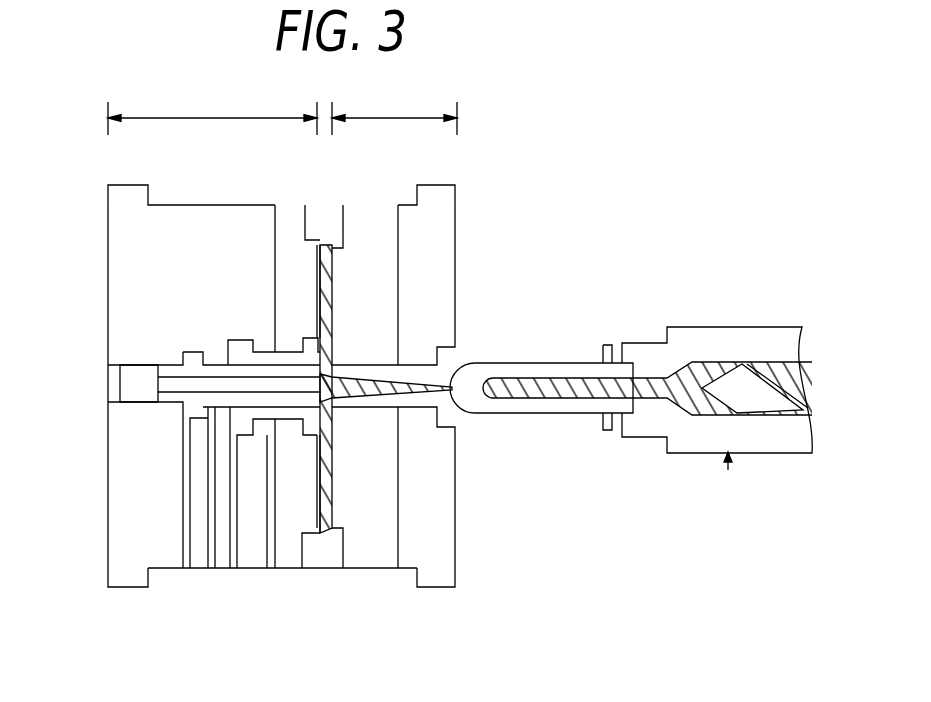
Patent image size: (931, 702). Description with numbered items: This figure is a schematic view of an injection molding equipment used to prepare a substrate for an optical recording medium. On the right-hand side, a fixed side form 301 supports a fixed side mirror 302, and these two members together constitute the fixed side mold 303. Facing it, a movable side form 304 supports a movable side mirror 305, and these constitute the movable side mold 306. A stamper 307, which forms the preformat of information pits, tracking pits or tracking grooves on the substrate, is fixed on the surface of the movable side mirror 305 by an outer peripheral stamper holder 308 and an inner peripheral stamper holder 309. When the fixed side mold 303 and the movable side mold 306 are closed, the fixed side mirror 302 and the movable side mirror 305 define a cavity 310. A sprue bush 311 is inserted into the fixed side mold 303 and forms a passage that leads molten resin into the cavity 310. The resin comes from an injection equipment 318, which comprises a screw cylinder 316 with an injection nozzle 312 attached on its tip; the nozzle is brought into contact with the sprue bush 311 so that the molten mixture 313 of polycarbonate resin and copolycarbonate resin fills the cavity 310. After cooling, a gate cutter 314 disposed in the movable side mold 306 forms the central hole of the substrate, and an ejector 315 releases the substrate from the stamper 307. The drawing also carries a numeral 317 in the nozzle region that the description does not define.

The fixed side form 301 is at (435, 582).
The fixed side mirror 302 is at (363, 553).
The fixed side mold 303 is at (375, 117).
The movable side form 304 is at (125, 572).
The movable side mirror 305 is at (292, 560).
The movable side mold 306 is at (213, 117).
The stamper 307 is at (313, 275).
The outer peripheral stamper holder 308 is at (317, 212).
The inner peripheral stamper holder 309 is at (297, 337).
The cavity 310 is at (333, 262).
The sprue bush 311 is at (450, 410).
The injection nozzle 312 is at (537, 373).
The mixture 313 is at (568, 392).
The gate cutter 314 is at (192, 408).
The ejector 315 is at (235, 348).
The screw cylinder 316 is at (733, 333).
The valve seat 317 is at (795, 390).
The injection equipment 318 is at (740, 485).